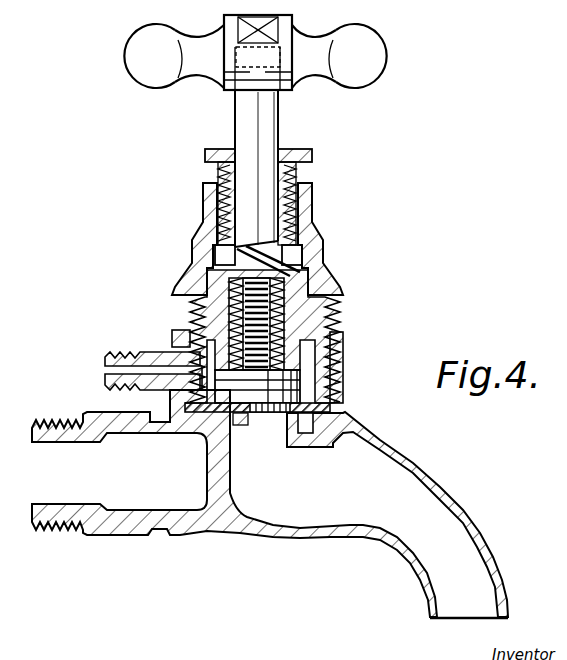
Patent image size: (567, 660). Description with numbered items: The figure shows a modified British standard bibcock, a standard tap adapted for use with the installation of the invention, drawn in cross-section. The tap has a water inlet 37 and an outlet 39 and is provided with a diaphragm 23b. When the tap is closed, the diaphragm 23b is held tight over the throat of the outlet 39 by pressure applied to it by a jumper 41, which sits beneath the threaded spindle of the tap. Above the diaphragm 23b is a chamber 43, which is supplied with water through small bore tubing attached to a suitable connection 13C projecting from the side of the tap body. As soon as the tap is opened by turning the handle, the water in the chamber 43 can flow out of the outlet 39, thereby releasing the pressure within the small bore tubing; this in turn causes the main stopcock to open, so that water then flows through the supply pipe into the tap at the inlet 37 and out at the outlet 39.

The connection 13C is at (152, 352).
The chamber 43 is at (310, 352).
The jumper 41 is at (302, 378).
The diaphragm 23b is at (333, 408).
The water inlet 37 is at (75, 473).
The outlet 39 is at (400, 509).